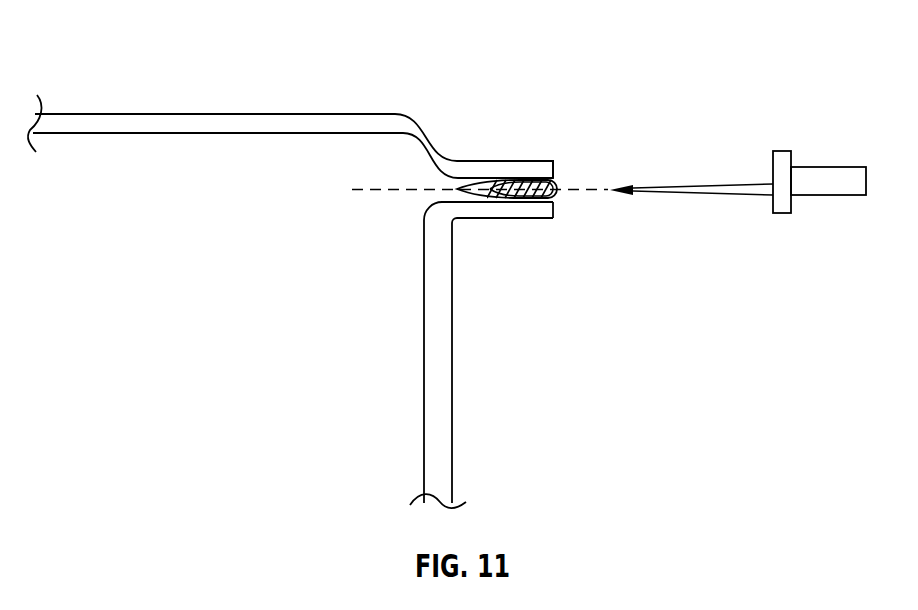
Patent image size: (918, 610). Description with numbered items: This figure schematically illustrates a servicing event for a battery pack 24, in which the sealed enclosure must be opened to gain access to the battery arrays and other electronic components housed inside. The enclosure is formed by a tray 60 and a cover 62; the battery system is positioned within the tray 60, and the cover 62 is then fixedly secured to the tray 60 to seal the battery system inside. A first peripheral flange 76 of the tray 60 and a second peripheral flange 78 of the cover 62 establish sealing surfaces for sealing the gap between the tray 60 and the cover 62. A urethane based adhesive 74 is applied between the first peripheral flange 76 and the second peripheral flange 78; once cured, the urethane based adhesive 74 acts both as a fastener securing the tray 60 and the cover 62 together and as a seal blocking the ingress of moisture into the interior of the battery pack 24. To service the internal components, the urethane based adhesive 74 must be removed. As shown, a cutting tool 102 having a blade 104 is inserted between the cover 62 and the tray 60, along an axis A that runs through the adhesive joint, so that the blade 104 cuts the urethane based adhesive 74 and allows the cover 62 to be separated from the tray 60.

The battery pack 24 is at (288, 84).
The cover 62 is at (167, 124).
The tray 60 is at (438, 395).
The first peripheral flange 76 is at (505, 211).
The second peripheral flange 78 is at (502, 168).
The urethane based adhesive 74 is at (523, 182).
The cutting tool 102 is at (747, 140).
The blade 104 is at (663, 187).
The axis A is at (375, 193).